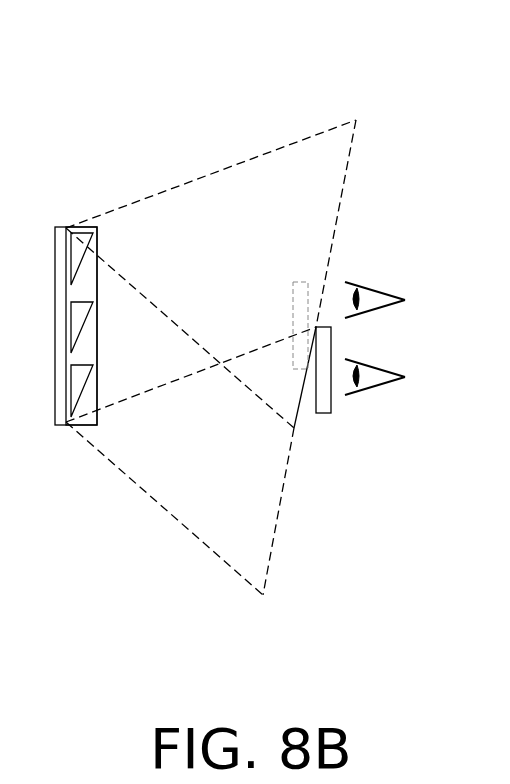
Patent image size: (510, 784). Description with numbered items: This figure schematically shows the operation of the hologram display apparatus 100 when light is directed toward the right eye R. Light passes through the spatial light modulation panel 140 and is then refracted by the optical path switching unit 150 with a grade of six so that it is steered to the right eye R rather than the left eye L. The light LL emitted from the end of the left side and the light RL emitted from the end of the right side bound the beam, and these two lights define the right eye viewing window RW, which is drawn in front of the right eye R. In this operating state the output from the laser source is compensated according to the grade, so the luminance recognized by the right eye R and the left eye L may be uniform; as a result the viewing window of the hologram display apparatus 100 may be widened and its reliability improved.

The hologram display apparatus 100 is at (424, 43).
The spatial light modulation panel 140 is at (62, 227).
The optical path switching unit 150 is at (90, 228).
The light emitted from end of the left side LL is at (222, 170).
The light emitted from end of the right side RL is at (168, 513).
The right eye viewing window RW is at (323, 413).
The left eye L is at (405, 300).
The right eye R is at (405, 377).